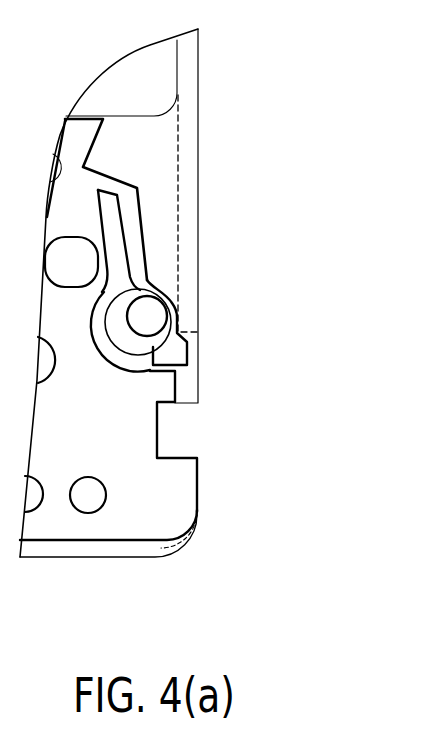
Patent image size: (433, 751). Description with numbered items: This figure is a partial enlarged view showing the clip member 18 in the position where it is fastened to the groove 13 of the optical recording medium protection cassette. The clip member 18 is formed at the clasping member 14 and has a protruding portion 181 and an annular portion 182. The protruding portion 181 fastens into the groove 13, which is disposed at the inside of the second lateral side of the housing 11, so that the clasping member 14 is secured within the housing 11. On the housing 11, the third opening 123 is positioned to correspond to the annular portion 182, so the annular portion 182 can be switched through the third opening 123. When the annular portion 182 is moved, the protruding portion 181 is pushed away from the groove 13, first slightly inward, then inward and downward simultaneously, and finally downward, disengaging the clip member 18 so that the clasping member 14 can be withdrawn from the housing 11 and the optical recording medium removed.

The housing 11 is at (162, 165).
The groove 13 is at (192, 338).
The clasping member 14 is at (135, 549).
The clip member 18 is at (218, 267).
The protruding portion 181 is at (178, 351).
The annular portion 182 is at (138, 343).
The third opening 123 is at (133, 385).